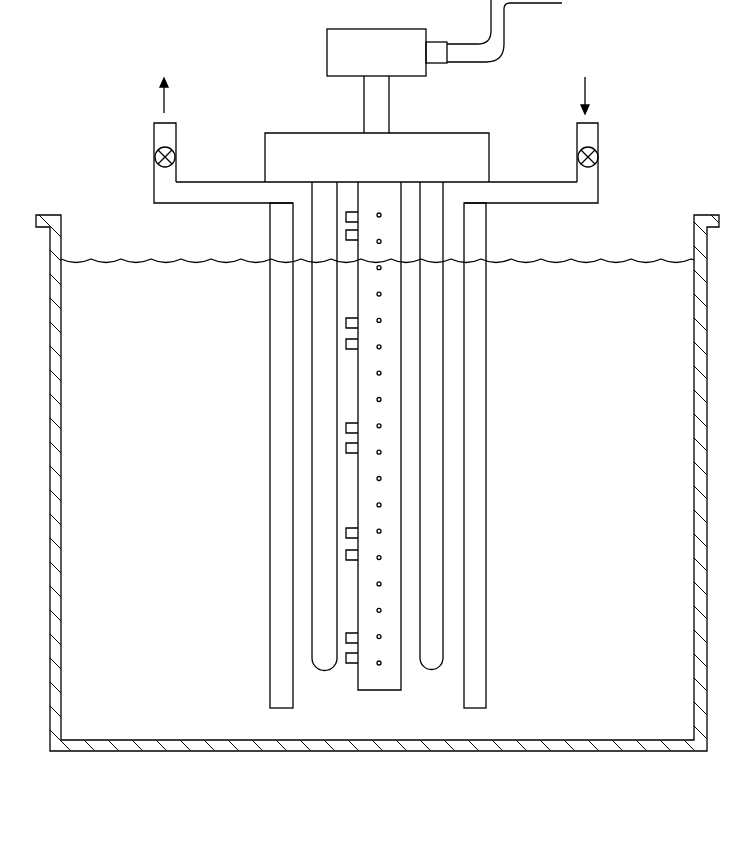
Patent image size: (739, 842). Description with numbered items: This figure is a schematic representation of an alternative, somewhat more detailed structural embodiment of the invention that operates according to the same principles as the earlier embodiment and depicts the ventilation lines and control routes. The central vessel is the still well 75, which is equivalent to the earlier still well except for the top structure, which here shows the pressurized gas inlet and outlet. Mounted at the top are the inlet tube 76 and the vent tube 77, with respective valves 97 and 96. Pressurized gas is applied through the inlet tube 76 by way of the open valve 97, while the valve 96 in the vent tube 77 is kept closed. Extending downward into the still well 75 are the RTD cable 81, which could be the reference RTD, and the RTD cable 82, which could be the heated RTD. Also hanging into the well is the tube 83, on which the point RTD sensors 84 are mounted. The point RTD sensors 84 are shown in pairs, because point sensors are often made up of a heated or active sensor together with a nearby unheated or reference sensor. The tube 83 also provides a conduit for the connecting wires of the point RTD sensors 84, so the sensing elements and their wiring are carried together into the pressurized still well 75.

The still well 75 is at (487, 455).
The inlet tube 76 is at (599, 135).
The vent tube 77 is at (154, 133).
The RTD cable 81 is at (443, 378).
The RTD cable 82 is at (312, 365).
The tube 83 is at (363, 377).
The point RTD sensors 84 is at (346, 343).
The valve 96 is at (156, 158).
The valve 97 is at (442, 486).